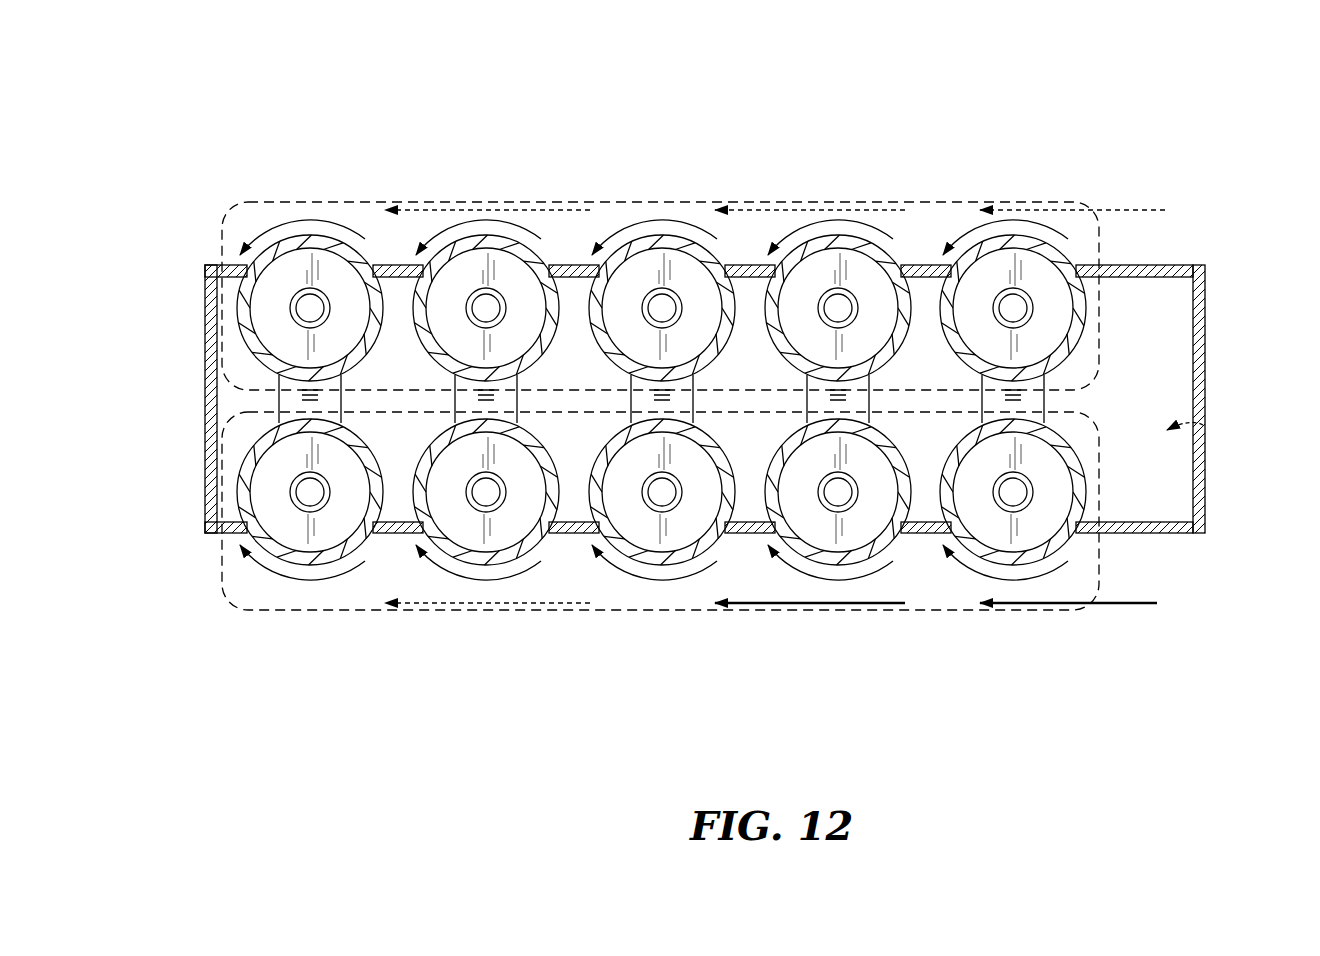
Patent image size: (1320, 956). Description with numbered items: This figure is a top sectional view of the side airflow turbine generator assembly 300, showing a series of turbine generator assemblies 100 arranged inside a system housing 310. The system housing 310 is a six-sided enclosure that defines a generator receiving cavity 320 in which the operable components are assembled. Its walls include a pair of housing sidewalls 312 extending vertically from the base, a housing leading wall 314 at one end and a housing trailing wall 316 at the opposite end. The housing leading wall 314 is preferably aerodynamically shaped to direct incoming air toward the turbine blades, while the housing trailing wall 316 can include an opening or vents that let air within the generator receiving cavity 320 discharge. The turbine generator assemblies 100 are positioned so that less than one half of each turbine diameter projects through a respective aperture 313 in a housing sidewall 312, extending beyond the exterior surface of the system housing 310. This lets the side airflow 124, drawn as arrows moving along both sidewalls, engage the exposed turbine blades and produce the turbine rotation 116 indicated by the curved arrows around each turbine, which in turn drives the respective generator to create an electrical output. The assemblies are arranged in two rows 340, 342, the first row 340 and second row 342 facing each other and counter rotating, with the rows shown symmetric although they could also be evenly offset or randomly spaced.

The side airflow turbine generator assembly 300 is at (318, 148).
The turbine generator assembly 100 is at (235, 207).
The turbine rotation 116 is at (592, 253).
The first row 340 is at (660, 200).
The second row 342 is at (660, 612).
The aperture 313 is at (768, 253).
The housing sidewall 312 is at (932, 265).
The side airflow 124 is at (1073, 212).
The housing trailing wall 316 is at (204, 360).
The housing leading wall 314 is at (1205, 360).
The generator receiving cavity 320 is at (1203, 425).
The system housing 310 is at (715, 399).